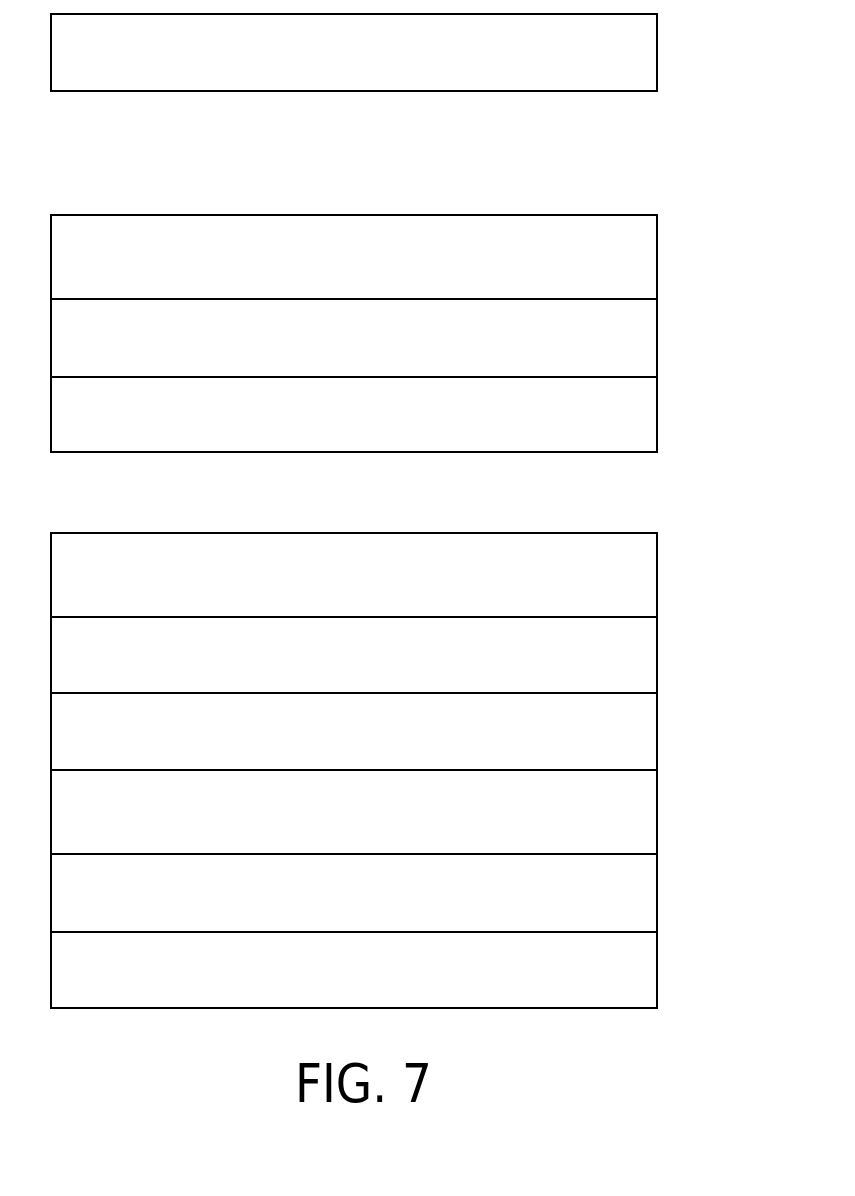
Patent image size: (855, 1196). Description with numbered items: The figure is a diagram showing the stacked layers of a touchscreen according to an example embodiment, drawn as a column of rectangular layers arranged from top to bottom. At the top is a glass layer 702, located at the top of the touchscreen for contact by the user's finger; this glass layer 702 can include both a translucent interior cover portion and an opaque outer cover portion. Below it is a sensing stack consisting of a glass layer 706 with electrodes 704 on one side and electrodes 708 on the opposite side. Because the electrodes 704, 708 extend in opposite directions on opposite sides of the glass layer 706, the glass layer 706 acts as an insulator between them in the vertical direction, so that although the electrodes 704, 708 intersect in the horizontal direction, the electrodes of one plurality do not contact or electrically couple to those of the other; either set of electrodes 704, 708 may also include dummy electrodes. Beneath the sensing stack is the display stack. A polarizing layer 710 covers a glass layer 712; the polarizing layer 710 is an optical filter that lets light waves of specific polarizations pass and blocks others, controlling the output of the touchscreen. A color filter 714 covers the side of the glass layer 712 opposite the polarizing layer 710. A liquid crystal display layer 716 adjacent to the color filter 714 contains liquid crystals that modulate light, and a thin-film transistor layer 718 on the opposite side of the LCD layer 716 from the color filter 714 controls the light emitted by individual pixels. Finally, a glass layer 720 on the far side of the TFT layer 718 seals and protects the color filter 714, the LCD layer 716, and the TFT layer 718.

The glass layer 702 is at (657, 59).
The electrodes 704 is at (657, 250).
The glass layer 706 is at (657, 337).
The electrodes 708 is at (657, 412).
The polarizing layer 710 is at (657, 574).
The glass layer 712 is at (657, 651).
The color filter 714 is at (657, 735).
The liquid crystal display (LCD) layer 716 is at (657, 810).
The thin-film transistor (TFT) layer 718 is at (657, 894).
The glass layer 720 is at (657, 972).